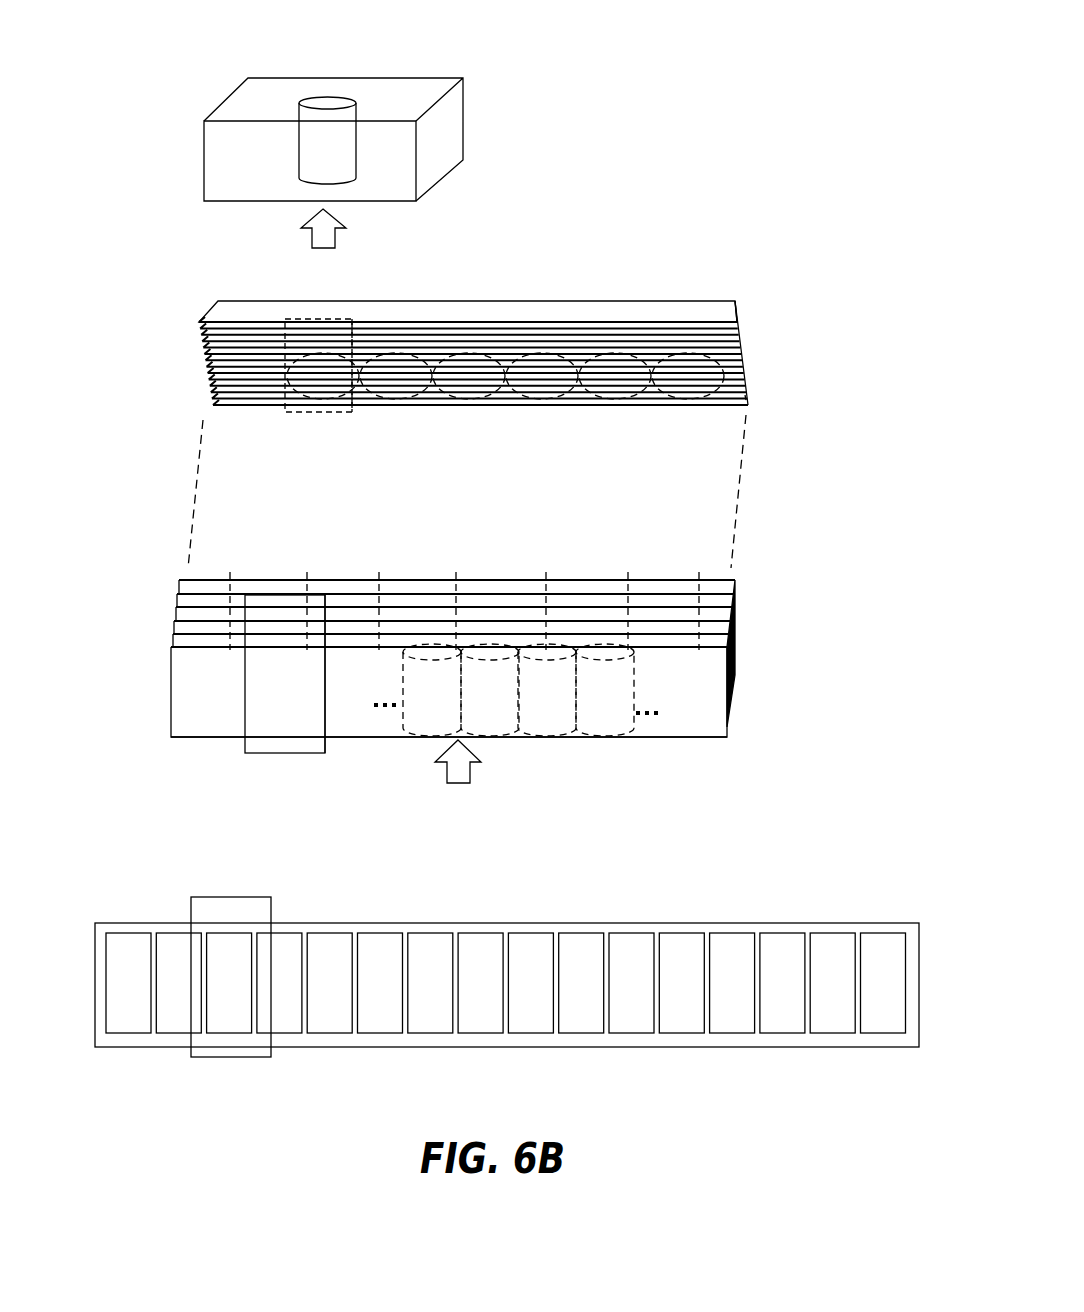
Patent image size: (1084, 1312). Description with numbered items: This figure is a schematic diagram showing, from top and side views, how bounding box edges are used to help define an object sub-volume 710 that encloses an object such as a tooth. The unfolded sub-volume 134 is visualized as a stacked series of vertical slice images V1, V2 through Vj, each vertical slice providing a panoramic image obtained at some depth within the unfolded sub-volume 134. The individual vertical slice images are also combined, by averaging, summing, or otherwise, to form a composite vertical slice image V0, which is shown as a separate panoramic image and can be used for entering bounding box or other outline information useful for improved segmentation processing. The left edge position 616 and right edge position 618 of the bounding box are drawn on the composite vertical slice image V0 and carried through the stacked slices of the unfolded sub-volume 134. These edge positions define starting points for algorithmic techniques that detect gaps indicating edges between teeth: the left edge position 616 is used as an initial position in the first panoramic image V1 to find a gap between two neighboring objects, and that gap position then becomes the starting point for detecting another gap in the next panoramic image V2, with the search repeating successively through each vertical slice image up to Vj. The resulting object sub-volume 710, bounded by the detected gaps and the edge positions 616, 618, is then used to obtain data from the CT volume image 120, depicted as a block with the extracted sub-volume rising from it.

The object sub-volume 710 is at (355, 104).
The CT volume image 120 is at (455, 148).
The unfolded sub-volume 134 is at (585, 302).
The left edge position of bounding box 616 is at (287, 348).
The right edge position of bounding box 618 is at (350, 335).
The vertical slice image Vj is at (735, 301).
The vertical slice image V2 is at (748, 395).
The vertical slice image V1 is at (748, 405).
The composite vertical slice image V0 is at (662, 923).